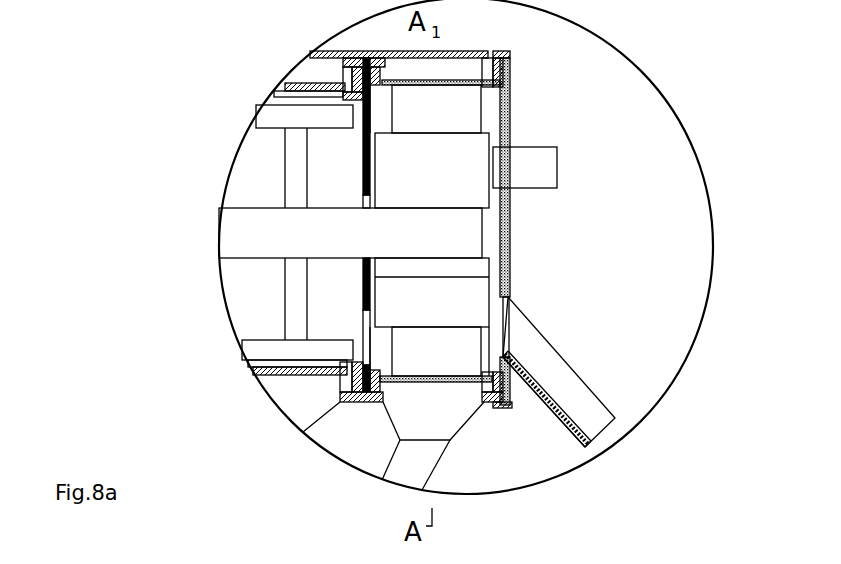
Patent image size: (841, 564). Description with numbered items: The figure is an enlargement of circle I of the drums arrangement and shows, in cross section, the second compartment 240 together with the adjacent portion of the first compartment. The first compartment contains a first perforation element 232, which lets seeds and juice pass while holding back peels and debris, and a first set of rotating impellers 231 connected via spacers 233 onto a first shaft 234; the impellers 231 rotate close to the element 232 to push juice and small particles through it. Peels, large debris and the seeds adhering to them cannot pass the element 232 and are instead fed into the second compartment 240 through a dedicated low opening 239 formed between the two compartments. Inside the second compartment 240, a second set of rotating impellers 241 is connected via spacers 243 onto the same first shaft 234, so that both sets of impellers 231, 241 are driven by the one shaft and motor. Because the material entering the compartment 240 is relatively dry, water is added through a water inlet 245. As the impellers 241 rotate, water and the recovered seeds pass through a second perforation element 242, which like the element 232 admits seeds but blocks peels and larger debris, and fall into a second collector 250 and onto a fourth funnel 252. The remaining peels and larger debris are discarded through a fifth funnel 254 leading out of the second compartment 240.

The circle I is at (667, 100).
The first set of rotating impellers 231 is at (280, 117).
The first perforation element 232 is at (300, 82).
The spacers 233 is at (303, 165).
The first shaft 234 is at (253, 245).
The low opening 239 is at (338, 400).
The second compartment 240 is at (505, 98).
The second set of rotating impellers 241 is at (460, 117).
The second perforation element 242 is at (452, 80).
The spacers 243 is at (463, 157).
The water inlet 245 is at (552, 167).
The second collector 250 is at (398, 410).
The fourth funnel 252 is at (408, 475).
The fifth funnel 254 is at (563, 380).